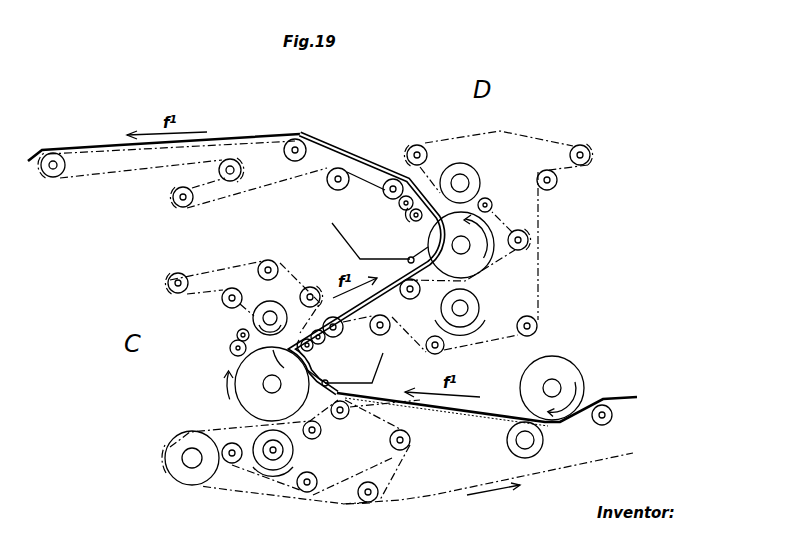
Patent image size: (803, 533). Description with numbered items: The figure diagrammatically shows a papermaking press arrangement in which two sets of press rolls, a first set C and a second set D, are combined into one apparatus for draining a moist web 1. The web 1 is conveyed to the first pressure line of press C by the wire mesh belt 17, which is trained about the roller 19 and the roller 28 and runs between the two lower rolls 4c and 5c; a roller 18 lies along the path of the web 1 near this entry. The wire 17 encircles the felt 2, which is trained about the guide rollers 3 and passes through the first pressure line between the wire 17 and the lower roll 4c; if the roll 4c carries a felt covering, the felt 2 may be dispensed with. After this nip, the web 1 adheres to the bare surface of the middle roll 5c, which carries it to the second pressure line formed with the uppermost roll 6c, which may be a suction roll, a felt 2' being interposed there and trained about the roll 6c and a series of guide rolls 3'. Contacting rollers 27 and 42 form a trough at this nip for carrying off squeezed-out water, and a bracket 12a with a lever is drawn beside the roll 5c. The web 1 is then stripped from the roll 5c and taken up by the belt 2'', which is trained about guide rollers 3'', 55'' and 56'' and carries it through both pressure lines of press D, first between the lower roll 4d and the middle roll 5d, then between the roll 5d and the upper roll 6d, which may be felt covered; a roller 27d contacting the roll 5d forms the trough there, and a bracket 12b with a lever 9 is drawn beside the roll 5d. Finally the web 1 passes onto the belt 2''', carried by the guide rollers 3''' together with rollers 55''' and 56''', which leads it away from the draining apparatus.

The moist web 1 is at (102, 146).
The felt 2 is at (295, 452).
The felt 2' is at (243, 285).
The belt 2'' is at (468, 242).
The belt 2''' is at (211, 174).
The guide rollers 3 is at (311, 473).
The guide rolls 3' is at (209, 268).
The guide rollers 3'' is at (488, 228).
The guide rollers 3''' is at (190, 170).
The lower roll 4c is at (292, 453).
The lower roll 4d is at (477, 302).
The middle roll 5c is at (266, 384).
The middle roll 5d is at (461, 245).
The uppermost roll 6c is at (253, 318).
The upper roll 6d is at (471, 176).
The lever 9 is at (418, 247).
The bracket 12a is at (344, 369).
The bracket 12b is at (351, 256).
The wire mesh belt 17 is at (434, 497).
The roller 18 is at (570, 373).
The roller 19 is at (516, 449).
The roller 27 is at (231, 351).
The roller 27d is at (501, 196).
The roller 28 is at (177, 458).
The roller 42 is at (237, 336).
The guide roller 55'' is at (351, 334).
The pressure roller 55''' is at (372, 195).
The guide roller 56'' is at (324, 352).
The pressure roller 56''' is at (394, 215).